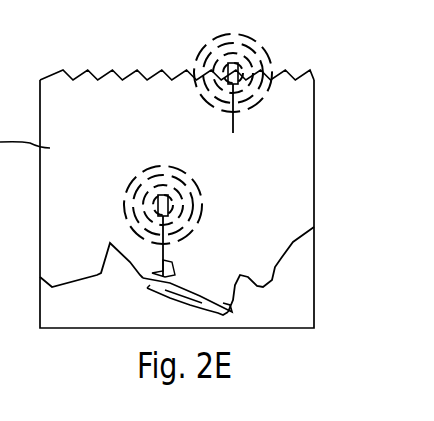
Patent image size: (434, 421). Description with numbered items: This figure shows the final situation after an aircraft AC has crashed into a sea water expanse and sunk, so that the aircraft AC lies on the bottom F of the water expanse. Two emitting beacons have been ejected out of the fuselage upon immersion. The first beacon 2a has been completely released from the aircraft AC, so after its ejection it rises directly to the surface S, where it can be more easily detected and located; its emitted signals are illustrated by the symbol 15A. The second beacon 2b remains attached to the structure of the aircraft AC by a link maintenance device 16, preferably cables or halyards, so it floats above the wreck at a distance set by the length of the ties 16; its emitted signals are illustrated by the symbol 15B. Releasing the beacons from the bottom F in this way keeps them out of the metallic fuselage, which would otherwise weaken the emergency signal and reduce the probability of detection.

The surface S is at (310, 62).
The symbol 15A is at (198, 51).
The symbol 15B is at (138, 169).
The beacon 2a is at (243, 66).
The beacon 2b is at (158, 207).
The link maintenance device 16 is at (165, 250).
The aircraft AC is at (195, 284).
The bottom F is at (258, 268).